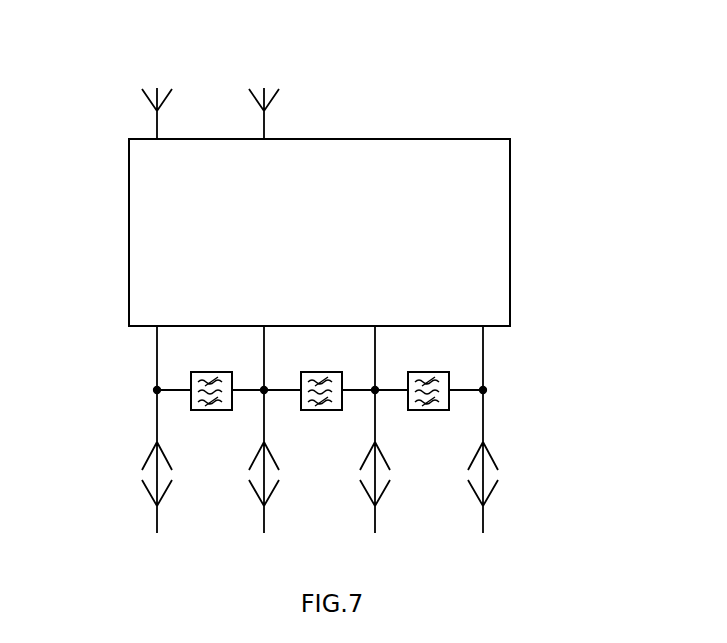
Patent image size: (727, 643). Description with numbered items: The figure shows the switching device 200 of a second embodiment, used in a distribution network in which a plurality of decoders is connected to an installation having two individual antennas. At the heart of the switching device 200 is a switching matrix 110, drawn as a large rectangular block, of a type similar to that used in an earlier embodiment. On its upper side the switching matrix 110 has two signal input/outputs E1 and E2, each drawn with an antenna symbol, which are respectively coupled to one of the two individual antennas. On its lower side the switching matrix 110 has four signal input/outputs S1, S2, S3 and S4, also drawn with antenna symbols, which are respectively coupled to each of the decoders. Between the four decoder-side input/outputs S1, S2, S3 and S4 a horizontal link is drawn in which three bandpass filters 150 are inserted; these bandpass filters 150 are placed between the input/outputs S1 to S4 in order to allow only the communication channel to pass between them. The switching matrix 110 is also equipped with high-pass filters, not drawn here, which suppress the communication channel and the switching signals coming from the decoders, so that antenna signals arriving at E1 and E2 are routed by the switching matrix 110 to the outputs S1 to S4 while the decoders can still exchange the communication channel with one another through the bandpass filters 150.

The switching matrix 110 is at (129, 235).
The bandpass filters 150 is at (212, 410).
The switching device 200 is at (540, 100).
The signal input/output E1 is at (157, 98).
The signal input/output E2 is at (264, 98).
The signal input/output S1 is at (157, 443).
The signal input/output S2 is at (264, 443).
The signal input/output S3 is at (375, 443).
The signal input/output S4 is at (483, 443).